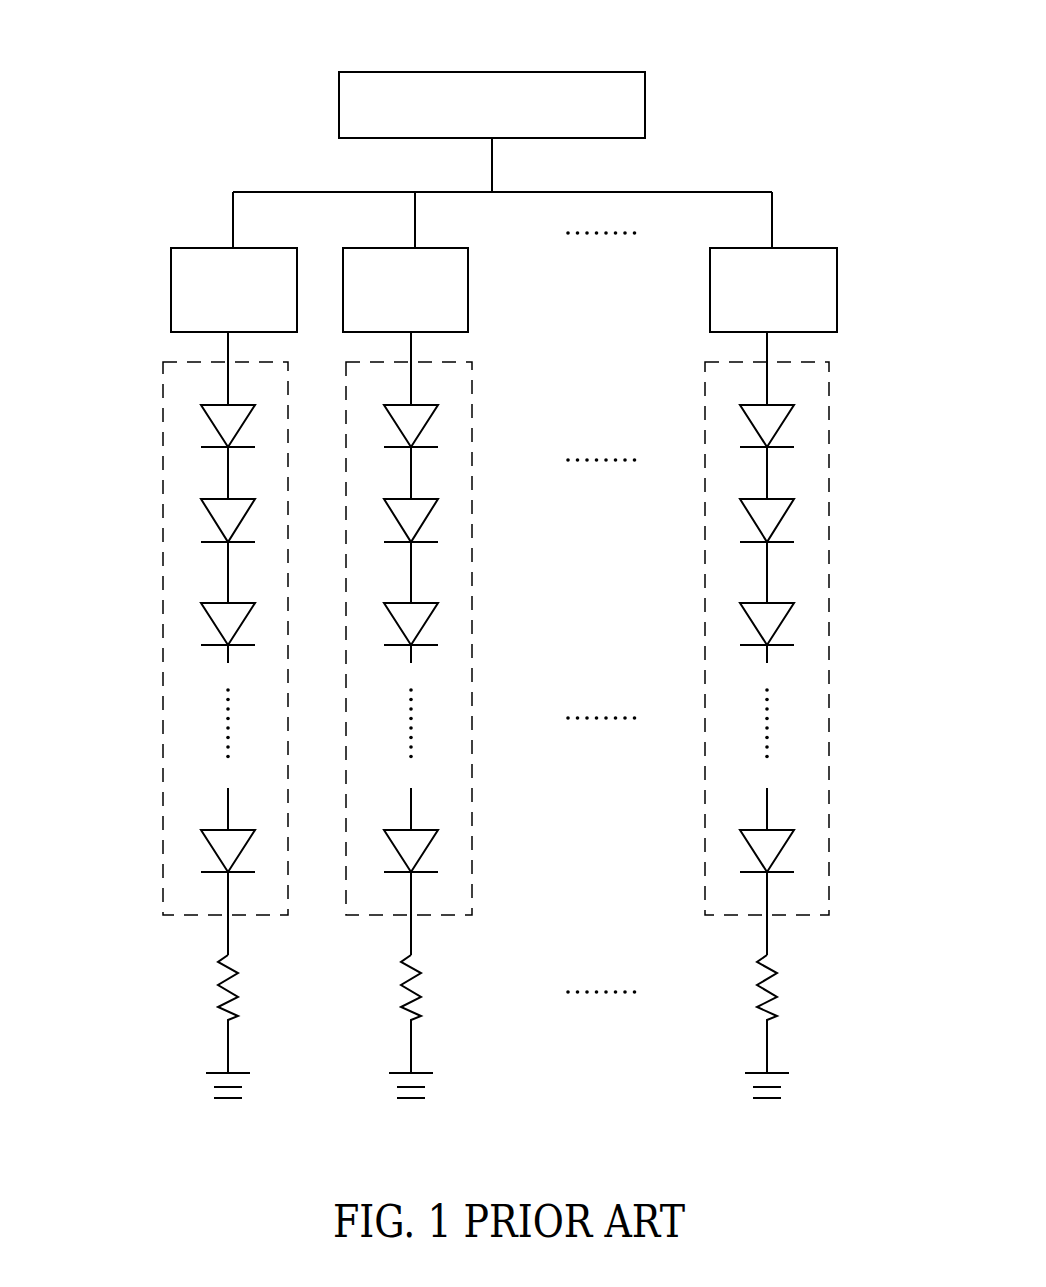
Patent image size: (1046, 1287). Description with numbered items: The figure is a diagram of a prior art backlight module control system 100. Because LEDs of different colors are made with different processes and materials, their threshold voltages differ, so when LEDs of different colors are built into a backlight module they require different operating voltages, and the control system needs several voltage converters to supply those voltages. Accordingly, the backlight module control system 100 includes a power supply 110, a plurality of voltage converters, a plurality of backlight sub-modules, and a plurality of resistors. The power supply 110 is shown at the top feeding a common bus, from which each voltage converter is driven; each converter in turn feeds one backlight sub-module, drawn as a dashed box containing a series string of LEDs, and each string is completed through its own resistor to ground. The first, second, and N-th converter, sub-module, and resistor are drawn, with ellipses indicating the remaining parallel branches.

The backlight module control system 100 is at (762, 82).
The power supply 110 is at (646, 106).